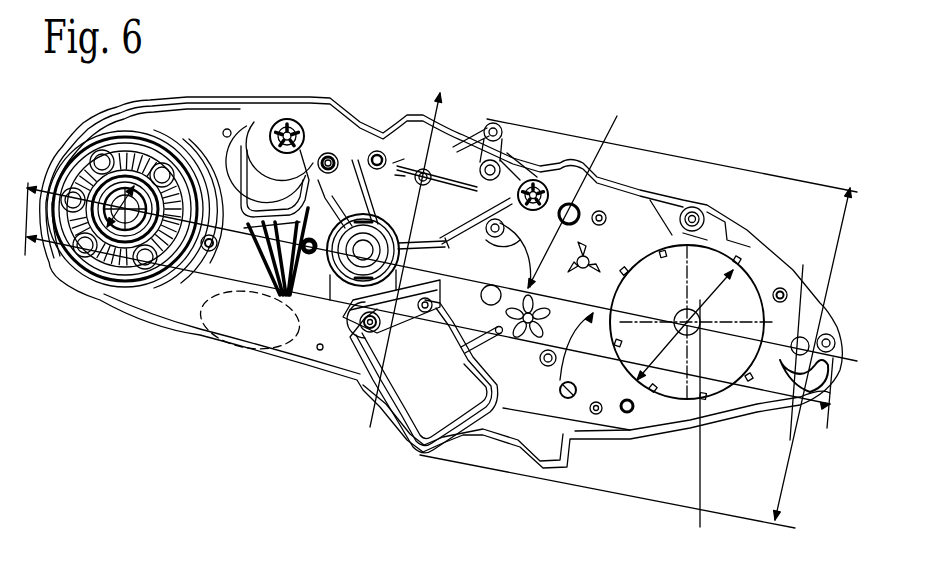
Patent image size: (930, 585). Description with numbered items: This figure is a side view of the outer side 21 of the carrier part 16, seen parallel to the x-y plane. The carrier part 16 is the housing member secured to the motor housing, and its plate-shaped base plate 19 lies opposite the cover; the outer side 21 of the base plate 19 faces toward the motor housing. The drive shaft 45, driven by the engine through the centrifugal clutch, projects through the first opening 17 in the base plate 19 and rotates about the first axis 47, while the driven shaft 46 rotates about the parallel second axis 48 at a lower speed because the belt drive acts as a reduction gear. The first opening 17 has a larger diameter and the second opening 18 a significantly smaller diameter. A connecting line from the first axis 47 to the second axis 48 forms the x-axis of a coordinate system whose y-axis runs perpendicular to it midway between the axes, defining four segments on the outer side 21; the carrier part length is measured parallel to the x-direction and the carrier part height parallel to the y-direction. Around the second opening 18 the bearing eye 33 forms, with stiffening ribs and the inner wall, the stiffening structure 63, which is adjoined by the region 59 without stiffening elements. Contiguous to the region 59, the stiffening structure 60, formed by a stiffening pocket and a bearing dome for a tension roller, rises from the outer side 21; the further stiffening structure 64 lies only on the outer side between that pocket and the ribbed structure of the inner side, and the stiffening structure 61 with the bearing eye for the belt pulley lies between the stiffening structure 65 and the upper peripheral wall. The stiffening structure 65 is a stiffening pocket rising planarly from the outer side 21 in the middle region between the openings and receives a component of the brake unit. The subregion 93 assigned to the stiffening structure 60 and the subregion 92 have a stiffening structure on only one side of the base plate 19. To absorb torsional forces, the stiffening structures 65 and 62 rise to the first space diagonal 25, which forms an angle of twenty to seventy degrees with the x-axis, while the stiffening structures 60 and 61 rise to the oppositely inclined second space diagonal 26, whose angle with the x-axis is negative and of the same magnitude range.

The carrier part 16 is at (688, 149).
The first opening 17 is at (740, 290).
The second opening 18 is at (88, 262).
The base plate 19 is at (619, 245).
The outer side 21 is at (200, 112).
The first space diagonal 25 is at (372, 366).
The second space diagonal 26 is at (603, 417).
The bearing eye 33 is at (150, 265).
The drive shaft 45 is at (681, 395).
The driven shaft 46 is at (130, 262).
The first axis 47 is at (687, 323).
The second axis 48 is at (100, 154).
The region without stiffening elements 59 is at (203, 295).
The stiffening structure 60 is at (316, 120).
The stiffening structure 61 is at (387, 187).
The stiffening structure 62 is at (537, 183).
The stiffening structure 63 is at (133, 180).
The further stiffening structure 64 is at (300, 215).
The stiffening pocket 65 is at (420, 403).
The subregion 92 is at (282, 350).
The subregion 93 is at (280, 122).